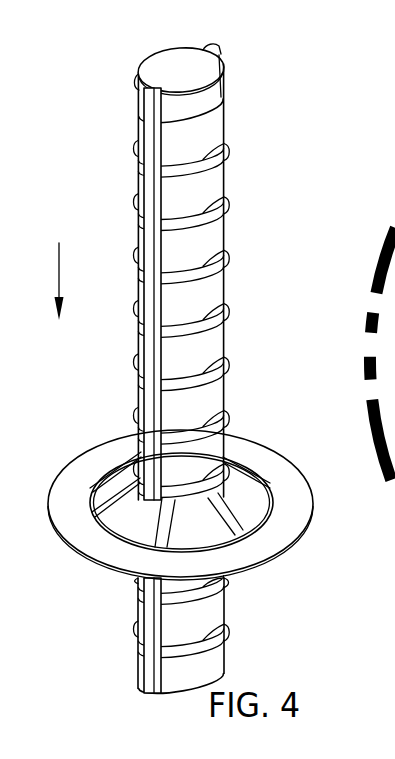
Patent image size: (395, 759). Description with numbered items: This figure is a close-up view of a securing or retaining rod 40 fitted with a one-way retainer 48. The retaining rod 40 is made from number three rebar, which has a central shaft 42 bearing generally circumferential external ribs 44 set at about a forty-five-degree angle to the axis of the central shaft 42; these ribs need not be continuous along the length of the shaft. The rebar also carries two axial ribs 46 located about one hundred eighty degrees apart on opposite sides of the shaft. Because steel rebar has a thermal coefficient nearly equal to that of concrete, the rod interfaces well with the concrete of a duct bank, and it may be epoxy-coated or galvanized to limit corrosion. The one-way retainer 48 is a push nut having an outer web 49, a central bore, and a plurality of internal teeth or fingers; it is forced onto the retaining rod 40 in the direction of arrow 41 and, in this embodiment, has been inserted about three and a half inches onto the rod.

The securing or retaining rod 40 is at (193, 364).
The arrow 41 is at (57, 268).
The central shaft 42 is at (224, 286).
The circumferential external ribs 44 is at (226, 262).
The axial ribs 46 is at (146, 118).
The one-way retainer 48 is at (302, 507).
The outer web 49 is at (126, 524).